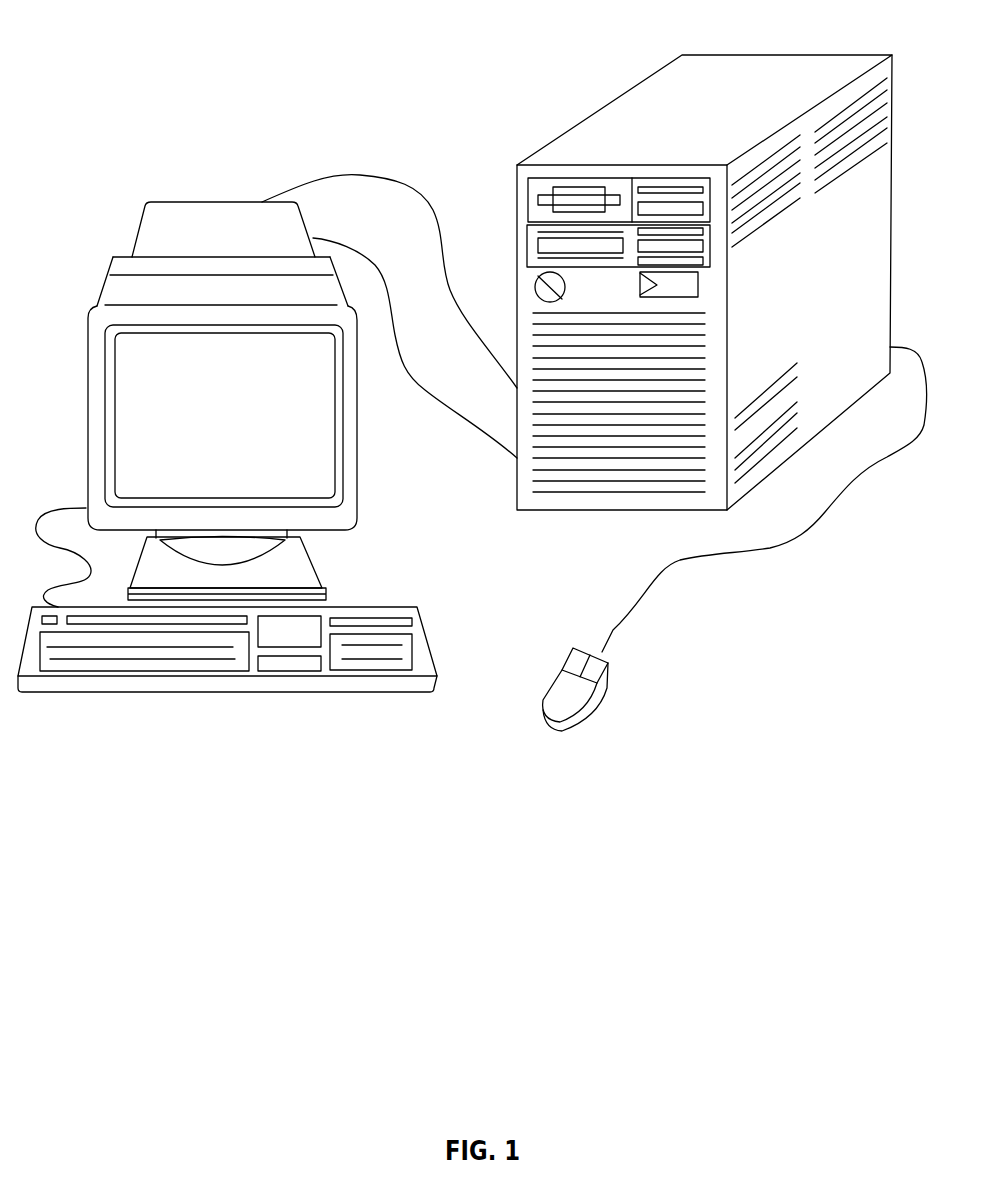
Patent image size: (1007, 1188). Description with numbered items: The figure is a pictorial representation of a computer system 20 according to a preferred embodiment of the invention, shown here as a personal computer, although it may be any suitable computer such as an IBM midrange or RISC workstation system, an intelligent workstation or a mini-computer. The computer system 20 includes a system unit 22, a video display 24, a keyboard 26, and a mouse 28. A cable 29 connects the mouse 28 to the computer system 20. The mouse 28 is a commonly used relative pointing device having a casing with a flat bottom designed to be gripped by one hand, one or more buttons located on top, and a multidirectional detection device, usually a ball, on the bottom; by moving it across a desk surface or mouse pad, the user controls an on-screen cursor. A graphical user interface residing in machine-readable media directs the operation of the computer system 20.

The computer system 20 is at (197, 106).
The system unit 22 is at (528, 287).
The video display 24 is at (200, 201).
The keyboard 26 is at (218, 692).
The mouse 28 is at (592, 710).
The cable 29 is at (708, 557).